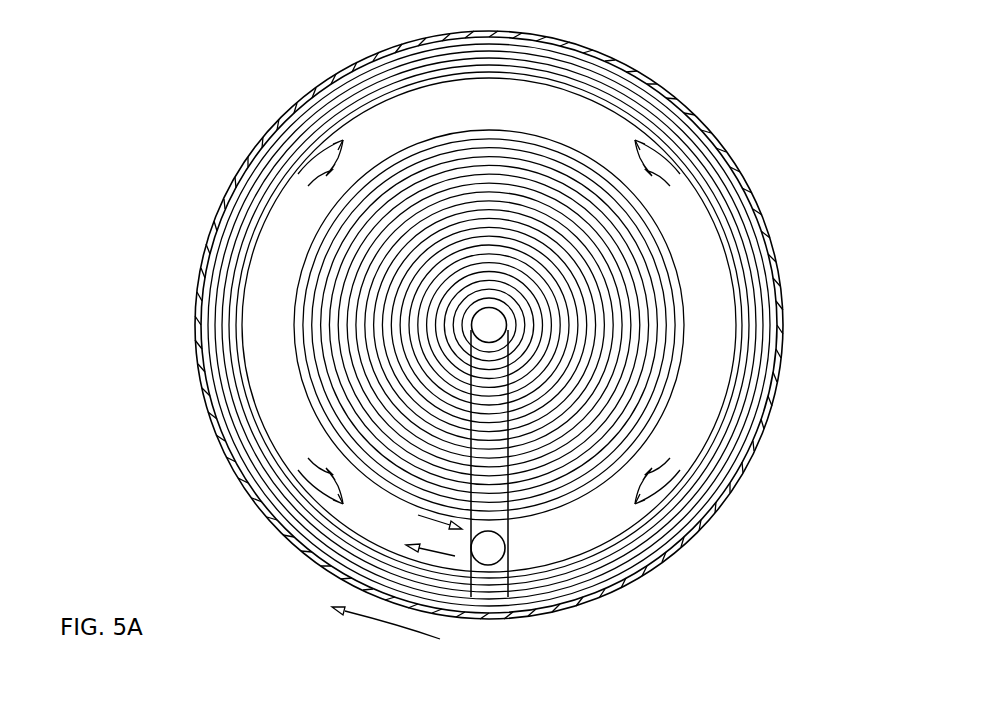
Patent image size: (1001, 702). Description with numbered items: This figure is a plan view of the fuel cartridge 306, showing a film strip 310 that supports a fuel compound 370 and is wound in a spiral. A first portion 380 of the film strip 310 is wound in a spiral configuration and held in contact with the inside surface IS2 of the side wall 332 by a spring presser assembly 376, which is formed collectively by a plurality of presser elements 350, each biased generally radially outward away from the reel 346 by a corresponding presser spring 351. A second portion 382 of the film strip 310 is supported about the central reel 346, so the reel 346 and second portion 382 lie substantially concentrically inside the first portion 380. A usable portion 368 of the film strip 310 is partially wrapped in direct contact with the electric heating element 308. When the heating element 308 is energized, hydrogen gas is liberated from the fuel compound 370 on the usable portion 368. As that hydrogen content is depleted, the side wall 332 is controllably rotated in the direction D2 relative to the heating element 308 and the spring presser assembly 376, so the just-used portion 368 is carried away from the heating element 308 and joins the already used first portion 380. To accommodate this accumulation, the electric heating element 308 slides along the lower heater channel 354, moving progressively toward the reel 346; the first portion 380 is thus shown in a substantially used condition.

The fuel cartridge 306 is at (507, 315).
The electric heating element 308 is at (488, 556).
The film strip 310 is at (507, 130).
The side wall 332 is at (757, 200).
The reel 346 is at (492, 320).
The presser elements 350 is at (349, 506).
The presser spring 351 is at (309, 187).
The lower heater channel 354 is at (498, 523).
The usable portion of the film strip 368 is at (528, 555).
The fuel compound 370 is at (286, 362).
The spring presser assembly 376 is at (809, 256).
The first portion of the film strip 380 is at (191, 300).
The second portion of the film strip 382 is at (297, 329).
The inside surface IS2 is at (775, 333).
The direction of rotation D2 is at (372, 623).